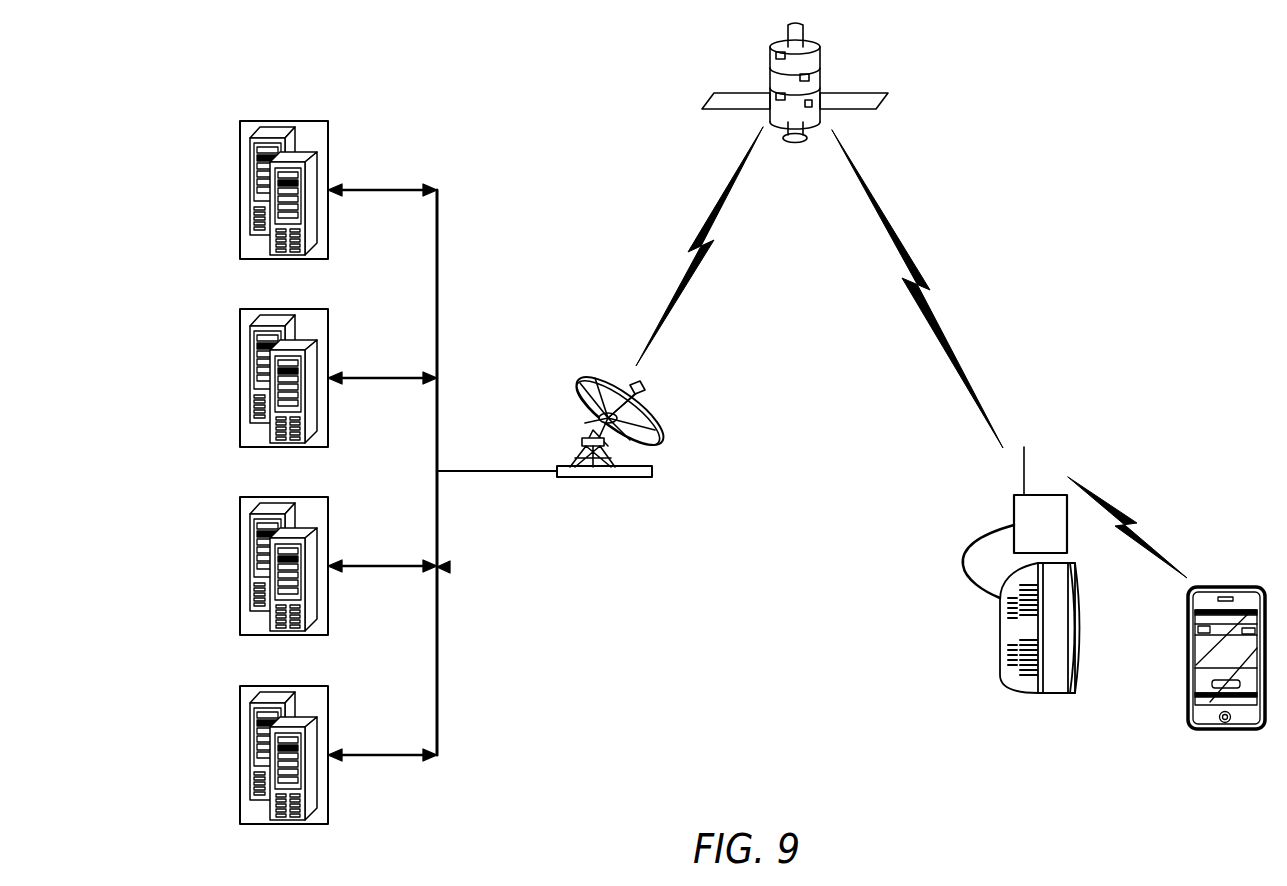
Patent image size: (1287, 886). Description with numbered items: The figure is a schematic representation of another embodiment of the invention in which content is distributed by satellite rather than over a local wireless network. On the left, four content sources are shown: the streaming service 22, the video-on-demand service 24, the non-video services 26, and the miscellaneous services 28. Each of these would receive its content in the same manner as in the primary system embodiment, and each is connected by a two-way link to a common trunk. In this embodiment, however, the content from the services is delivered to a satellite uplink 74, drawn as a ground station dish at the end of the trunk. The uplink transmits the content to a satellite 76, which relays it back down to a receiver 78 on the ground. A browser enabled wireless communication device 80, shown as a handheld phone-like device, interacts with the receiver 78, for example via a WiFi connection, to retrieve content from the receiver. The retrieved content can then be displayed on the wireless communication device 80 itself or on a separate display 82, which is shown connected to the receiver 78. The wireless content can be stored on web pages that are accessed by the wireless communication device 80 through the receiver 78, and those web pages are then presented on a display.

The streaming service 22 is at (328, 154).
The video-on-demand service 24 is at (328, 343).
The non-video services 26 is at (328, 532).
The miscellaneous services 28 is at (328, 717).
The satellite uplink 74 is at (580, 402).
The satellite 76 is at (822, 80).
The receiver 78 is at (1014, 510).
The browser enabled wireless communication device 80 is at (1188, 664).
The separate display 82 is at (1054, 695).